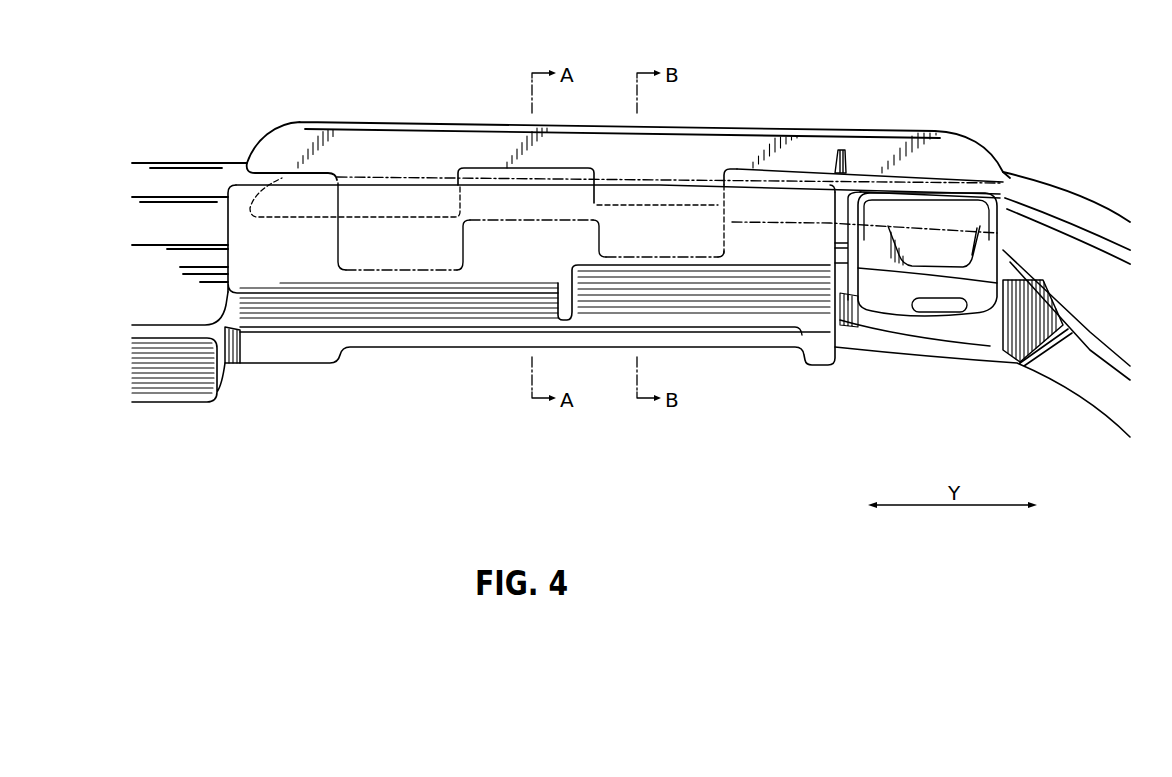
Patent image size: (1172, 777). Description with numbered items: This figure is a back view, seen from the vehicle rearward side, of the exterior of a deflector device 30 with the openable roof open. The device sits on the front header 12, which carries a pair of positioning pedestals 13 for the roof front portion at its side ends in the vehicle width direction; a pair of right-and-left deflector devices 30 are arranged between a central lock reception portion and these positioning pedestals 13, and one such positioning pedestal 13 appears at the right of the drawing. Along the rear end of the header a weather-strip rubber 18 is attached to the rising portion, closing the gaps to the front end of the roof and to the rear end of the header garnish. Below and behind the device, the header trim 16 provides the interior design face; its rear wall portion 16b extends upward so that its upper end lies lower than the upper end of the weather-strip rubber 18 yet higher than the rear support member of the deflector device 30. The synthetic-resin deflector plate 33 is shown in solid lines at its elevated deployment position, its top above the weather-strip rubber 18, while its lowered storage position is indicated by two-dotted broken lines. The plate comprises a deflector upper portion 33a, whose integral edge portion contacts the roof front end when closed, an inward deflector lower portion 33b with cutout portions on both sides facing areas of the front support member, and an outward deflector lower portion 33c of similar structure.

The front header 12 is at (139, 160).
The weather-strip rubber 18 is at (207, 178).
The deflector device 30 is at (433, 115).
The deflector plate 33 is at (868, 128).
The deflector upper portion 33a is at (292, 144).
The inward deflector lower portion 33b is at (465, 207).
The outward deflector lower portion 33c is at (725, 207).
The positioning pedestal 13 is at (912, 318).
The header trim 16 is at (483, 314).
The rear wall portion 16b is at (282, 272).